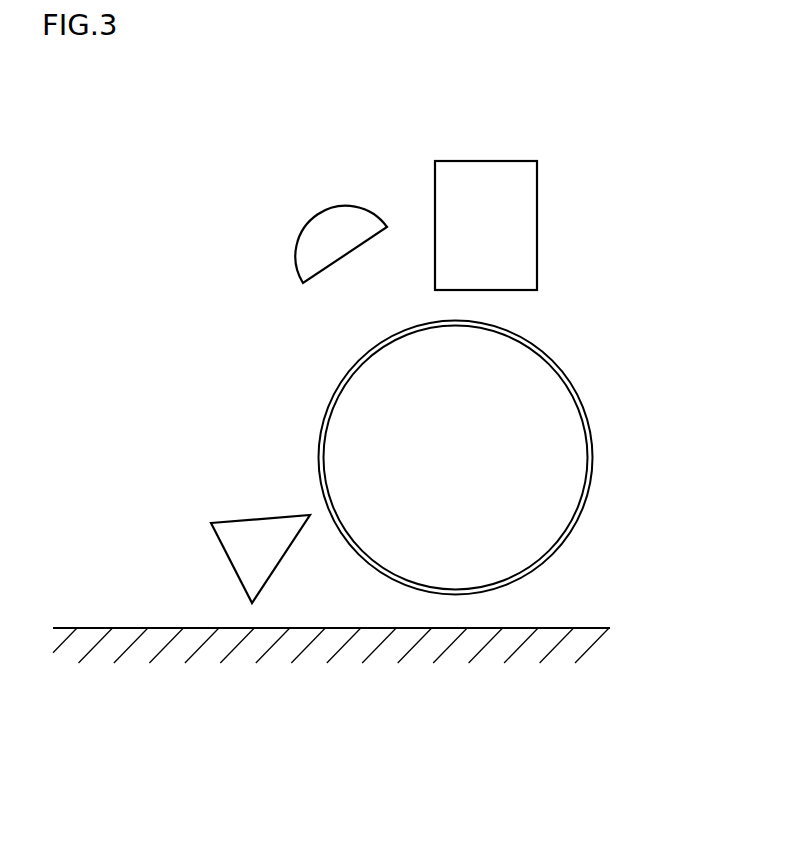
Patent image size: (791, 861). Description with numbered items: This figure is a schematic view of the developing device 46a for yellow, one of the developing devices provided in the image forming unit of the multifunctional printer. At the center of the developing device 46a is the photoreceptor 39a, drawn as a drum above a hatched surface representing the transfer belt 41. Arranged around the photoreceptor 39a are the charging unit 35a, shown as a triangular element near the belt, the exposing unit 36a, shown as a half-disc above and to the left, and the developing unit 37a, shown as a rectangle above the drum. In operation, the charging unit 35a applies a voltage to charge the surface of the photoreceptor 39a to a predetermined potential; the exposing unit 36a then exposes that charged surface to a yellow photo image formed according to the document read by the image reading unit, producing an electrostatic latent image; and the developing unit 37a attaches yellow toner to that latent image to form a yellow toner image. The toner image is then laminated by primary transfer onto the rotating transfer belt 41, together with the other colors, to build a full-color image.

The developing device for yellow 46a is at (668, 98).
The developing unit 37a is at (510, 161).
The exposing unit 36a is at (292, 255).
The photoreceptor 39a is at (573, 382).
The charging unit 35a is at (250, 519).
The transfer belt 41 is at (118, 608).